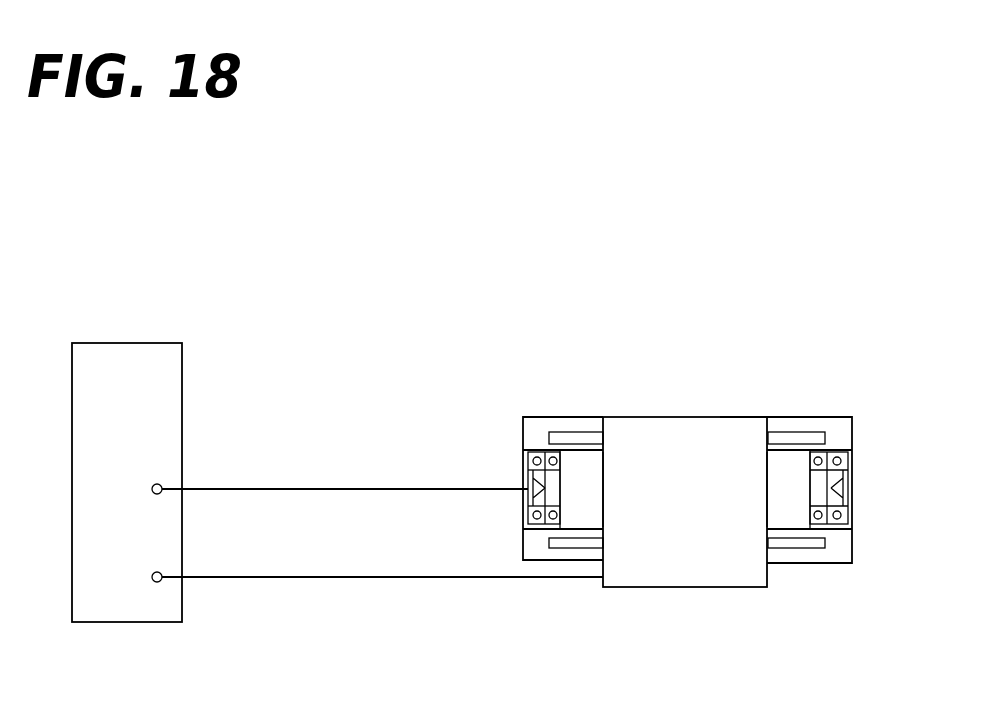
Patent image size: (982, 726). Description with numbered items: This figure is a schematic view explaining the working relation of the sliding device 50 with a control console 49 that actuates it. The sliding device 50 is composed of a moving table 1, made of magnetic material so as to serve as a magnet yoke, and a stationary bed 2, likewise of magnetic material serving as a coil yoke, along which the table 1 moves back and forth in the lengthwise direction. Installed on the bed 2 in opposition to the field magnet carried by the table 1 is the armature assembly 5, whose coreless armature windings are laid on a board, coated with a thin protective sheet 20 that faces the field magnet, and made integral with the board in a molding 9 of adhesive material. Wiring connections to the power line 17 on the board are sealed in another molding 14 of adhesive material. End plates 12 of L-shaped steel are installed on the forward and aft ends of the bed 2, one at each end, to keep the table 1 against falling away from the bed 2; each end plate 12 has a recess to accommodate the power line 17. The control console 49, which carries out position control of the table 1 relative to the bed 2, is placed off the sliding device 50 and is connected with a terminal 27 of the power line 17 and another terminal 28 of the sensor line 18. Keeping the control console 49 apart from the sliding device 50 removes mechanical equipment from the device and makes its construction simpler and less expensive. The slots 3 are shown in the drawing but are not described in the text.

The moving table 1 is at (645, 470).
The stationary bed 2 is at (540, 552).
The slot 3 is at (797, 430).
The armature assembly 5 is at (578, 482).
The molding 9 is at (783, 430).
The end plate 12 is at (845, 483).
The molding 14 is at (550, 495).
The power line 17 is at (364, 488).
The sensor line 18 is at (357, 580).
The protective sheet 20 is at (585, 493).
The terminal 27 is at (163, 485).
The terminal 28 is at (150, 592).
The control console 49 is at (110, 608).
The sliding device 50 is at (742, 415).